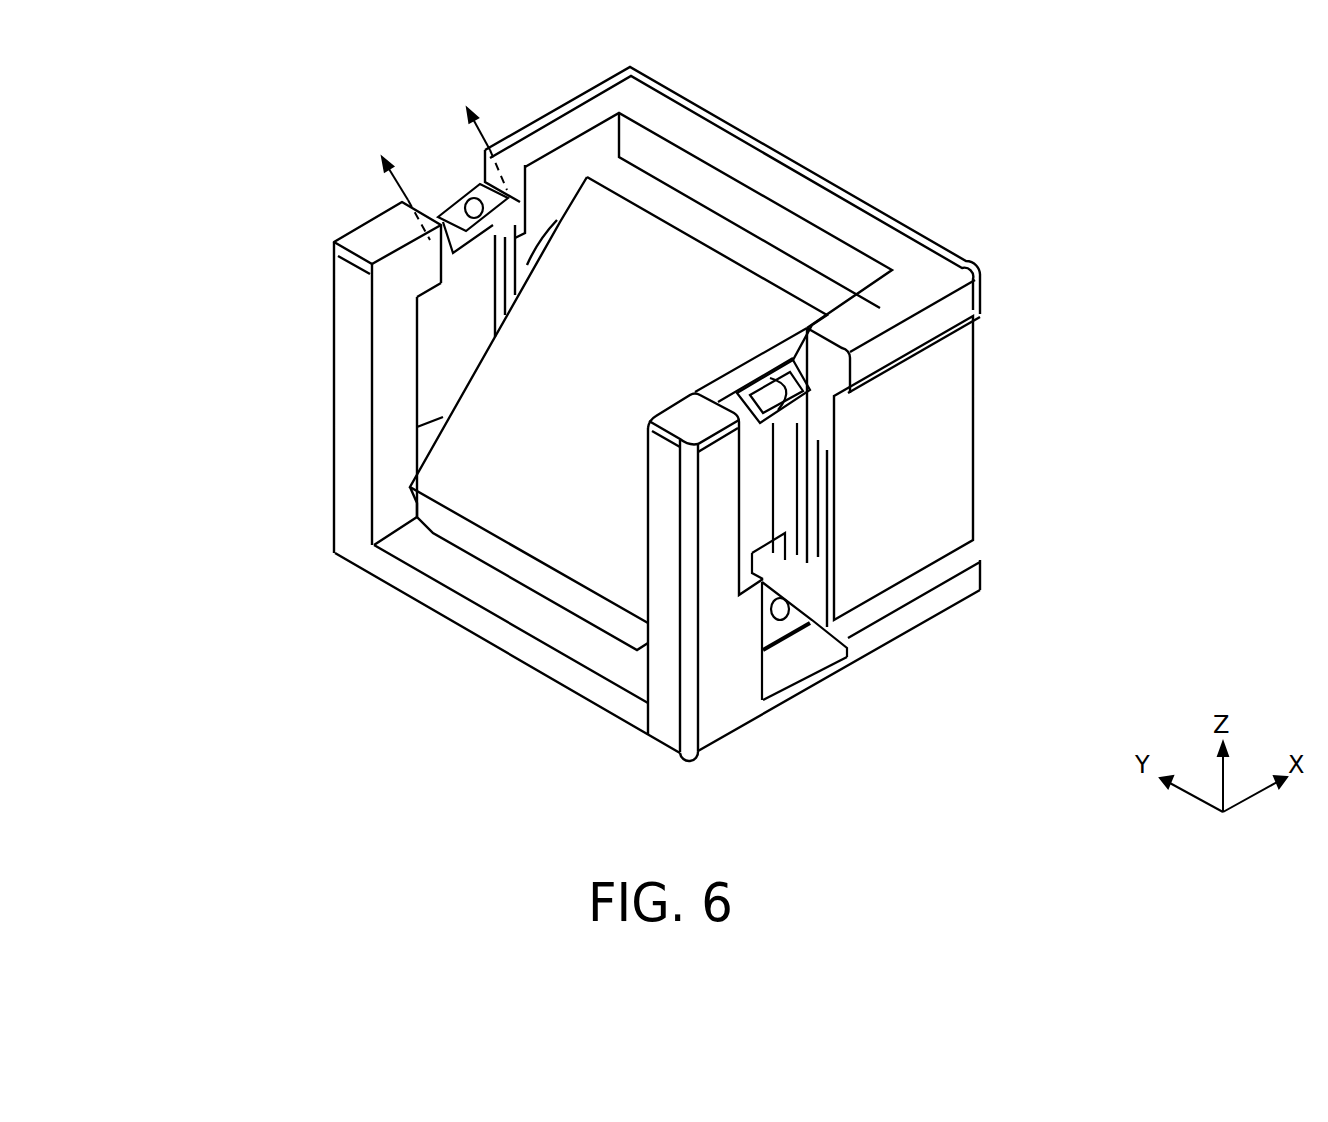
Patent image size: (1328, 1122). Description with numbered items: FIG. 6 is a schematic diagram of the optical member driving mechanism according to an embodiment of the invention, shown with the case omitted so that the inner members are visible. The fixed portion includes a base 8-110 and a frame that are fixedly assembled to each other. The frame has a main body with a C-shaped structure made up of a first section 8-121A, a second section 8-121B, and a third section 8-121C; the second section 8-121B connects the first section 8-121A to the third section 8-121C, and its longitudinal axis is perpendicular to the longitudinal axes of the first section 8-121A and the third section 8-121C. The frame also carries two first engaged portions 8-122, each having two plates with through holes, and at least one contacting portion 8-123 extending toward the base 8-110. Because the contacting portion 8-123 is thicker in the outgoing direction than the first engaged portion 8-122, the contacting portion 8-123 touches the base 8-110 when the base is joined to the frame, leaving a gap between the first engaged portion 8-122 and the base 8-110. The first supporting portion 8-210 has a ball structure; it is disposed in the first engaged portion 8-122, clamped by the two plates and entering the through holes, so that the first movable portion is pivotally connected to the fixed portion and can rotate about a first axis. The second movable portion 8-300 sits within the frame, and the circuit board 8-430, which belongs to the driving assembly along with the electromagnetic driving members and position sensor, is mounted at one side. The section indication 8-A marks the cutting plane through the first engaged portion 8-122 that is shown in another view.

The base 8-110 is at (938, 262).
The circuit board 8-430 is at (950, 410).
The first section 8-121A is at (357, 372).
The second section 8-121B is at (493, 630).
The third section 8-121C is at (667, 582).
The first engaged portion 8-122 is at (453, 212).
The contacting portion 8-123 is at (832, 668).
The first supporting portion 8-210 is at (808, 636).
The second movable portion 8-300 is at (737, 308).
The section line A 8-A is at (422, 156).